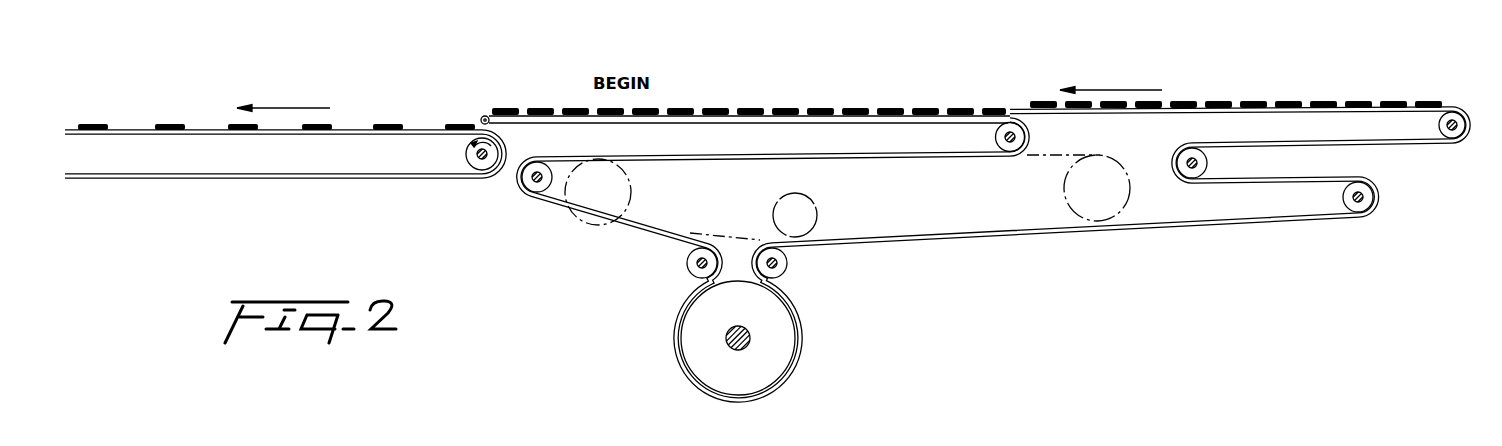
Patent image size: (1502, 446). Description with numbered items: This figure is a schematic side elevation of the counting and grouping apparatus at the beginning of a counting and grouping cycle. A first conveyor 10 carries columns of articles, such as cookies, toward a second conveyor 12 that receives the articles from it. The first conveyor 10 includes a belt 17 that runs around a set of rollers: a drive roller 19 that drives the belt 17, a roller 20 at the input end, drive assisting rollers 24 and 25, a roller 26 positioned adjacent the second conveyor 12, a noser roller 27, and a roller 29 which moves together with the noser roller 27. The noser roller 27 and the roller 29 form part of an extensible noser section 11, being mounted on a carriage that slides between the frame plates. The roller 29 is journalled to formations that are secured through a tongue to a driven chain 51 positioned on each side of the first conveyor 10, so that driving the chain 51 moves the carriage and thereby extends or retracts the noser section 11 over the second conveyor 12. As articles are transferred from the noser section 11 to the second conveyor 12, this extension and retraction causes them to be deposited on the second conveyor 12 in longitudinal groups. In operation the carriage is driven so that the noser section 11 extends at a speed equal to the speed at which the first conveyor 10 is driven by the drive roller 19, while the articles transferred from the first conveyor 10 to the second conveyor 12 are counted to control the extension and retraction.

The first conveyor 10 is at (922, 157).
The noser section 11 is at (735, 108).
The second conveyor 12 is at (418, 130).
The belt 17 is at (1222, 110).
The drive roller 19 is at (697, 346).
The roller 20 is at (1452, 133).
The drive assisting roller 24 is at (688, 268).
The drive assisting roller 25 is at (780, 273).
The roller 26 is at (533, 187).
The noser roller 27 is at (483, 115).
The roller 29 is at (1005, 124).
The driven chain 51 is at (730, 237).